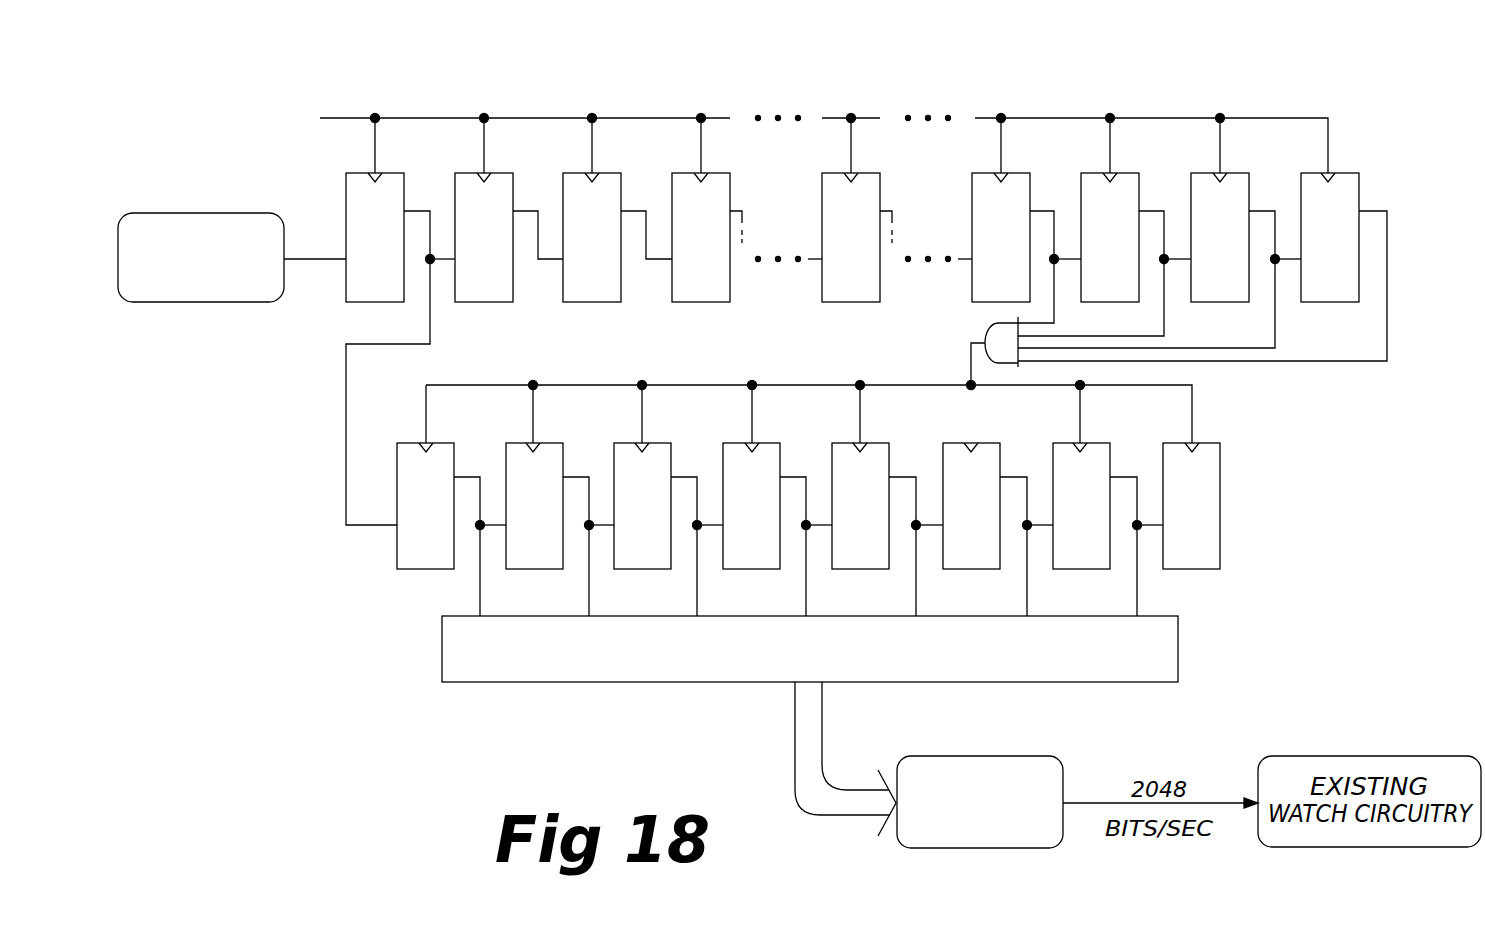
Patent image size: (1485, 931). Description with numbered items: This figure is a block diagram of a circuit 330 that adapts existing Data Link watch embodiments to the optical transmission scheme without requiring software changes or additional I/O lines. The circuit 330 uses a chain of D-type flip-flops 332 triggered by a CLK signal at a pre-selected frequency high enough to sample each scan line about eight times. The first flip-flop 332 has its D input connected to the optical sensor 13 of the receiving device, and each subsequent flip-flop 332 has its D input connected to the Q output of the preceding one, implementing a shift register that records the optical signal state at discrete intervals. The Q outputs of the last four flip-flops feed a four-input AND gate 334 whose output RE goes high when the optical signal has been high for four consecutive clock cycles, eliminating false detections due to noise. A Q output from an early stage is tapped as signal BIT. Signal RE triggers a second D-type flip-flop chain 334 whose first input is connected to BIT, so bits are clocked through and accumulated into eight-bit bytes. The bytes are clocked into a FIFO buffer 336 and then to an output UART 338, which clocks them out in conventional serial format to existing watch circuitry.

The sensor 13 is at (228, 290).
The circuit 330 is at (712, 68).
The D-type flip-flop 332 is at (320, 169).
The 4-input AND gate / second D-type flip-flop chain 334 is at (593, 358).
The FIFO buffer 336 is at (545, 676).
The output UART 338 is at (1038, 768).